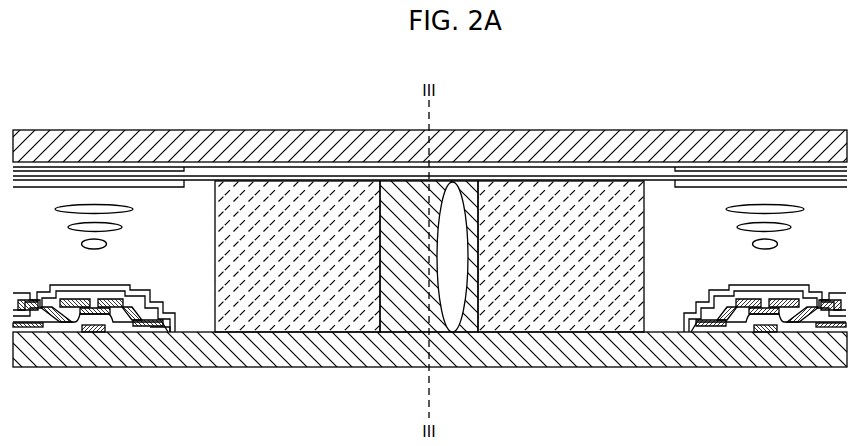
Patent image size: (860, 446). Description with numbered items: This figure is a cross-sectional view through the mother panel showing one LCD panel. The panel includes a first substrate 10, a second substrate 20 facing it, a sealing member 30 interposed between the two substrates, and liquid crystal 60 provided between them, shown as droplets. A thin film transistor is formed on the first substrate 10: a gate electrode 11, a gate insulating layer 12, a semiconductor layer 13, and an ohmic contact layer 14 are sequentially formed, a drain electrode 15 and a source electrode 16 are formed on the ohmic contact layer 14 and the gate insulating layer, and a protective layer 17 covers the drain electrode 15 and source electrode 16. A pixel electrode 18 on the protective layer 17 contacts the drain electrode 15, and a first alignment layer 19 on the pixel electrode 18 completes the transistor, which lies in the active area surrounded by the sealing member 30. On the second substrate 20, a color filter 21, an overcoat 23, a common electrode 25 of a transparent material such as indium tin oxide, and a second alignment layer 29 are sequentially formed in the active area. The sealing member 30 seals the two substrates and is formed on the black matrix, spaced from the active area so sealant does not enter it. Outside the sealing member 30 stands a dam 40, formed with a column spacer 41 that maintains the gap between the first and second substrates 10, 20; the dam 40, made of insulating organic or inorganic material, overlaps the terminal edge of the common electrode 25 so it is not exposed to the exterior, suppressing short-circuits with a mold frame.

The first substrate 10 is at (229, 347).
The gate electrode 11 is at (93, 329).
The gate insulating layer 12 is at (168, 325).
The semiconductor layer 13 is at (63, 323).
The ohmic contact layer 14 is at (120, 318).
The drain electrode 15 is at (33, 326).
The source electrode 16 is at (149, 323).
The protective layer 17 is at (123, 300).
The pixel electrode 18 is at (60, 298).
The first alignment layer 19 is at (36, 300).
The second substrate 20 is at (237, 141).
The color filter 21 is at (118, 165).
The overcoat 23 is at (293, 170).
The common electrode 25 is at (347, 178).
The second alignment layer 29 is at (63, 186).
The sealing member 30 is at (298, 306).
The dam 40 is at (399, 308).
The column spacer 41 is at (470, 313).
The liquid crystal 60 is at (57, 209).